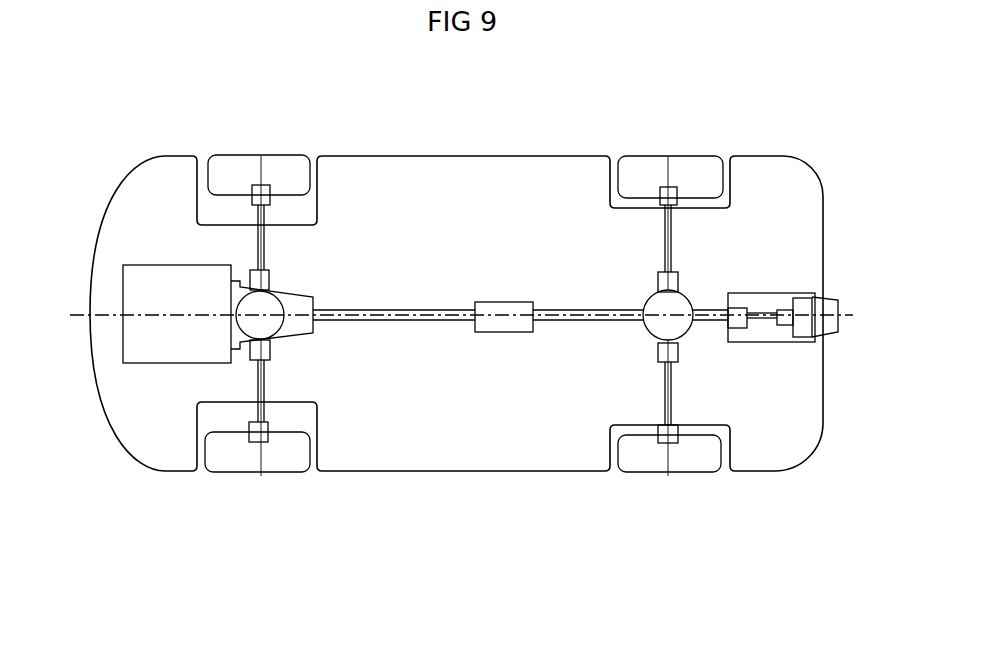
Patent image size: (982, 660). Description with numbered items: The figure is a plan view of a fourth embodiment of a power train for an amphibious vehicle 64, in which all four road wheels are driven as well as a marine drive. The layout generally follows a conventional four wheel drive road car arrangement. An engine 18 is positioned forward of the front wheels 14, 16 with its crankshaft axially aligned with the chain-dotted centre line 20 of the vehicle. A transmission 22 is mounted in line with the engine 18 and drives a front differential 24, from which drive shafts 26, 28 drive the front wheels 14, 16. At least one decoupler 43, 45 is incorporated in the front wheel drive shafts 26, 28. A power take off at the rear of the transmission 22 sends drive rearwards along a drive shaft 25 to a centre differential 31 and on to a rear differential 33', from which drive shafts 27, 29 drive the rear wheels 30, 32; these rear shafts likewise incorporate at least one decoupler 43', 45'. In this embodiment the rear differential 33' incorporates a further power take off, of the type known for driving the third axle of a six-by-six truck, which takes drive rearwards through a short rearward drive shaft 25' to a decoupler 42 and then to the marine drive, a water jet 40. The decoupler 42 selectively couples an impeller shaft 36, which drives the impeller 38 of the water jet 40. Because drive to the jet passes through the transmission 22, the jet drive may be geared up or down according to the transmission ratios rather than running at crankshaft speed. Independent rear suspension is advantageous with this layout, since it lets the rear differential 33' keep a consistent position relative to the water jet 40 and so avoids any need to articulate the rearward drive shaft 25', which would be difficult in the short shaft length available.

The front wheel 14 is at (238, 173).
The front wheel 16 is at (238, 462).
The engine 18 is at (142, 285).
The centre line 20 is at (107, 315).
The transmission 22 is at (301, 301).
The differential 24 is at (266, 303).
The drive shaft 25 is at (478, 207).
The rearward drive shaft 25' is at (780, 388).
The drive shaft 26 is at (258, 238).
The drive shaft 27 is at (677, 274).
The drive shaft 28 is at (257, 383).
The drive shaft 29 is at (670, 397).
The rear wheel 30 is at (643, 180).
The centre differential 31 is at (508, 303).
The rear wheel 32 is at (685, 452).
The rear differential 33' is at (763, 208).
The impeller shaft 36 is at (752, 322).
The impeller 38 is at (805, 303).
The water jet 40 is at (770, 300).
The decoupler 42 is at (731, 307).
The decoupler 43 is at (165, 226).
The decoupler 43' is at (721, 195).
The decoupler 45 is at (159, 384).
The decoupler 45' is at (756, 419).
The vehicle 64 is at (484, 280).